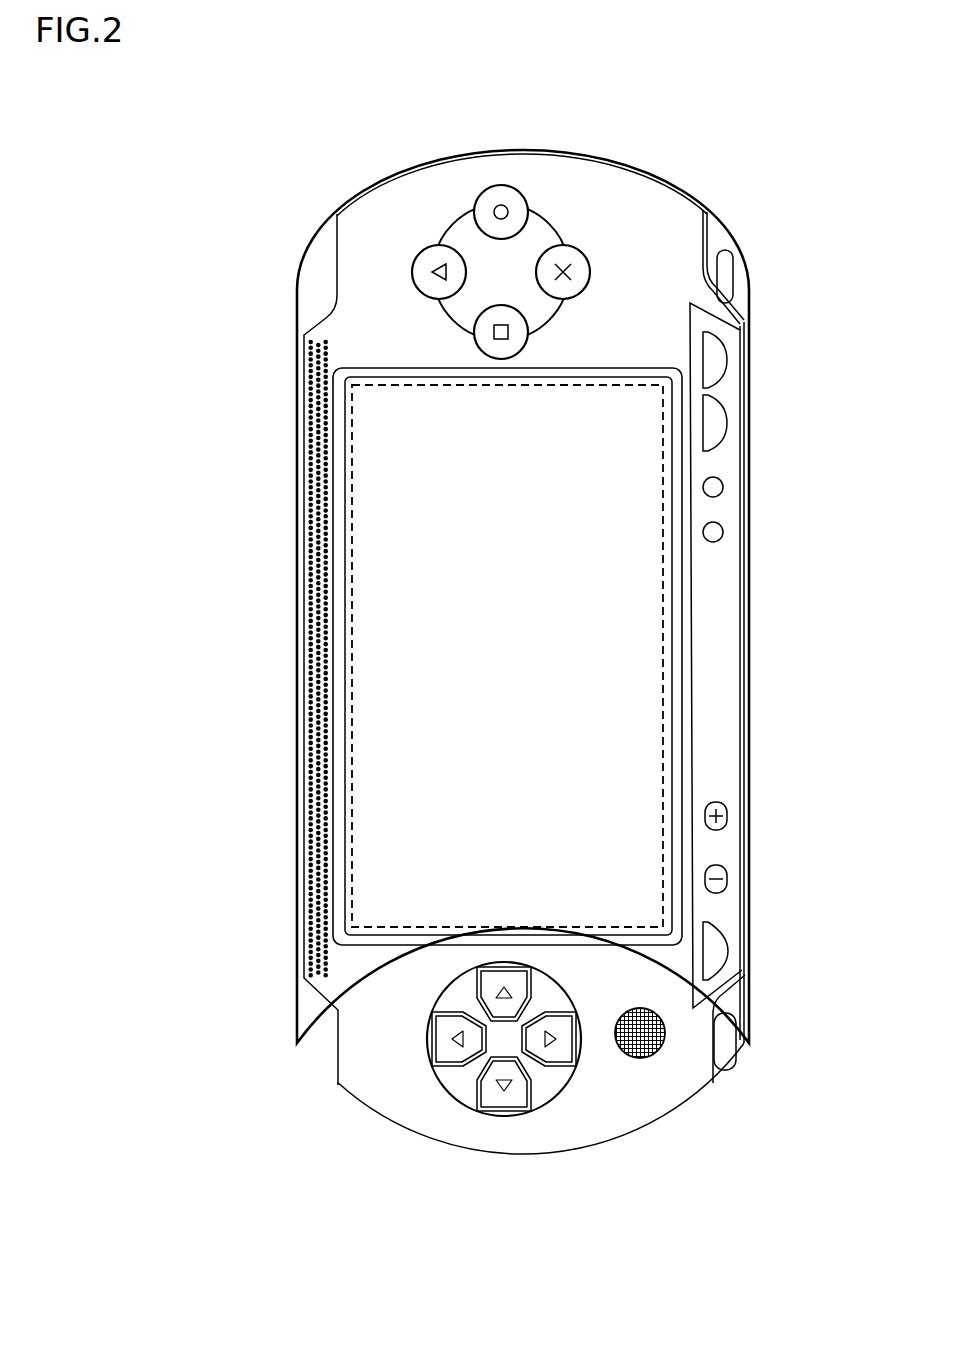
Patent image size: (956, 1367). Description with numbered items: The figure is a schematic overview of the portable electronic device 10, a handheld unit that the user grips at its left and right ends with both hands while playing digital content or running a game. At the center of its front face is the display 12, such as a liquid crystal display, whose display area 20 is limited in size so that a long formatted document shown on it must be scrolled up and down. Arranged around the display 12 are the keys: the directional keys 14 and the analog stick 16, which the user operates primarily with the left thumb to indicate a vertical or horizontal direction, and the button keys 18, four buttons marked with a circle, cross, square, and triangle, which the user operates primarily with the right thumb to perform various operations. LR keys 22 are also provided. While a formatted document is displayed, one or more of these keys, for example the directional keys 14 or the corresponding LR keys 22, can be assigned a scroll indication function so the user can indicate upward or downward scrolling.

The portable electronic device 10 is at (756, 787).
The display 12 is at (599, 380).
The directional keys 14 is at (460, 1082).
The analog stick 16 is at (645, 1057).
The button keys 18 is at (420, 185).
The display area 20 is at (353, 657).
The LR keys 22 is at (312, 281).